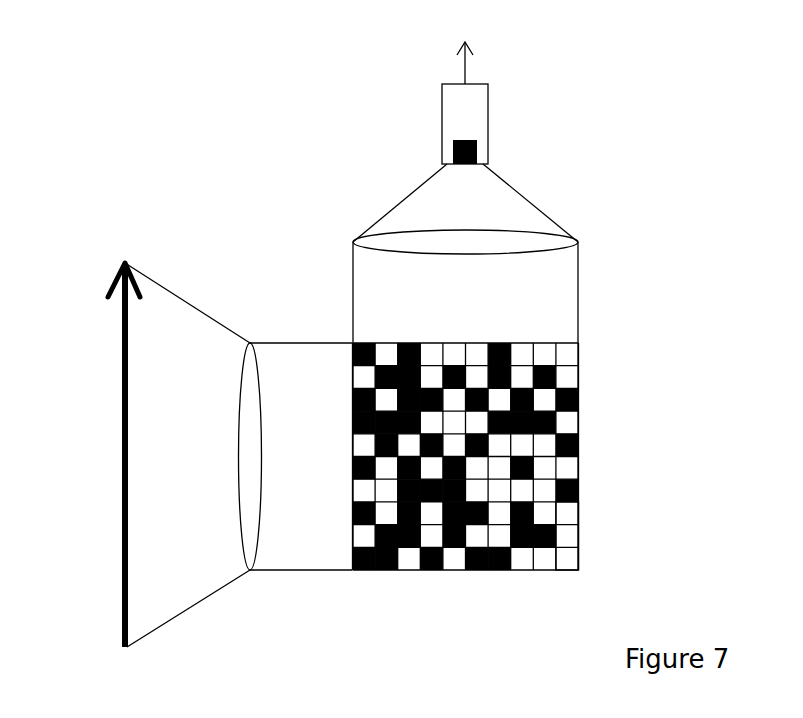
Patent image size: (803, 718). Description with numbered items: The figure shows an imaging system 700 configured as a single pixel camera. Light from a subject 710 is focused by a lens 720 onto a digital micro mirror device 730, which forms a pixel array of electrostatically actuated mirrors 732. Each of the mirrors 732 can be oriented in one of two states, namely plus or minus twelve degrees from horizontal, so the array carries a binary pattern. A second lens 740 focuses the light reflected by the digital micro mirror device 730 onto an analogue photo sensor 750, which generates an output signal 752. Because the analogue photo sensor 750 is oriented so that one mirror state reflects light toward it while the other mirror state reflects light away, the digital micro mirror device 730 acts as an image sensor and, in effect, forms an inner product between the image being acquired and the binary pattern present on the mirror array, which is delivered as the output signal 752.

The imaging system 700 is at (362, 366).
The subject 710 is at (122, 572).
The lens 720 is at (248, 575).
The digital micro mirror device 730 is at (498, 580).
The electrostatically actuated mirrors 732 is at (567, 513).
The second lens 740 is at (567, 237).
The analogue photo sensor 750 is at (464, 118).
The output signal 752 is at (475, 63).